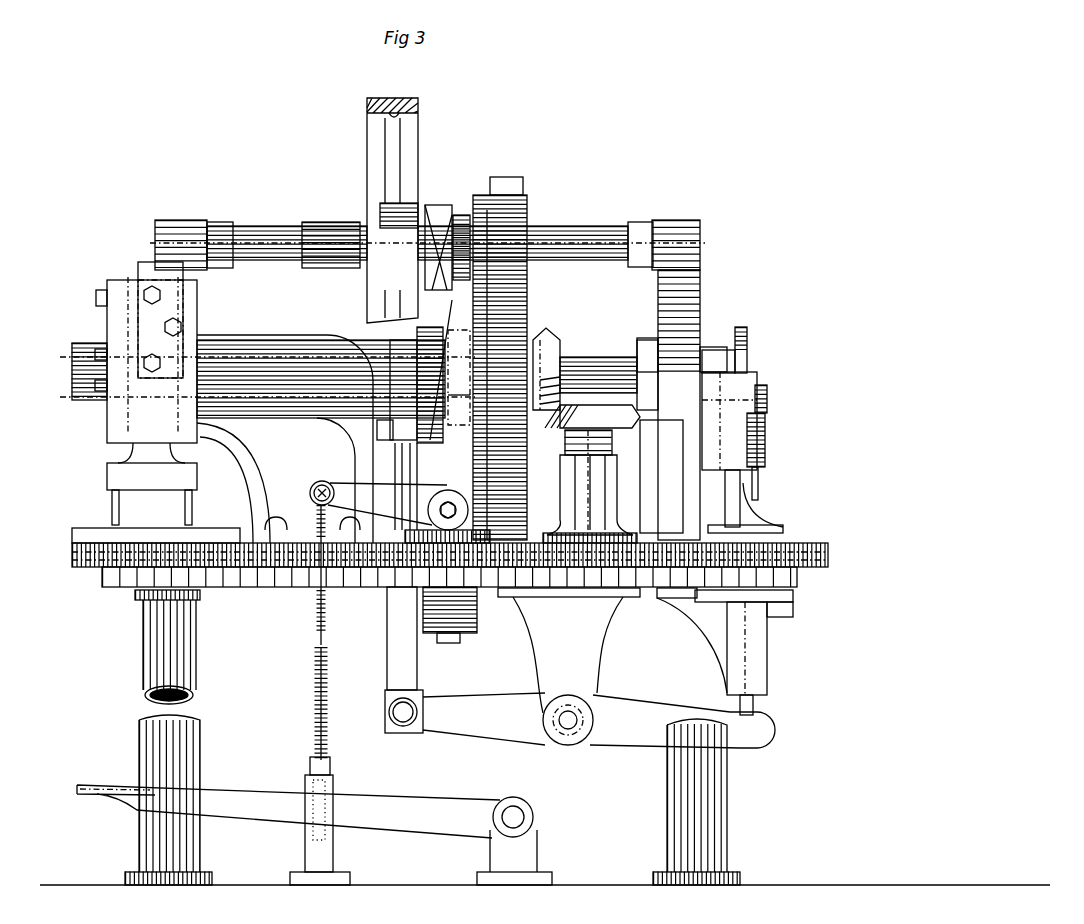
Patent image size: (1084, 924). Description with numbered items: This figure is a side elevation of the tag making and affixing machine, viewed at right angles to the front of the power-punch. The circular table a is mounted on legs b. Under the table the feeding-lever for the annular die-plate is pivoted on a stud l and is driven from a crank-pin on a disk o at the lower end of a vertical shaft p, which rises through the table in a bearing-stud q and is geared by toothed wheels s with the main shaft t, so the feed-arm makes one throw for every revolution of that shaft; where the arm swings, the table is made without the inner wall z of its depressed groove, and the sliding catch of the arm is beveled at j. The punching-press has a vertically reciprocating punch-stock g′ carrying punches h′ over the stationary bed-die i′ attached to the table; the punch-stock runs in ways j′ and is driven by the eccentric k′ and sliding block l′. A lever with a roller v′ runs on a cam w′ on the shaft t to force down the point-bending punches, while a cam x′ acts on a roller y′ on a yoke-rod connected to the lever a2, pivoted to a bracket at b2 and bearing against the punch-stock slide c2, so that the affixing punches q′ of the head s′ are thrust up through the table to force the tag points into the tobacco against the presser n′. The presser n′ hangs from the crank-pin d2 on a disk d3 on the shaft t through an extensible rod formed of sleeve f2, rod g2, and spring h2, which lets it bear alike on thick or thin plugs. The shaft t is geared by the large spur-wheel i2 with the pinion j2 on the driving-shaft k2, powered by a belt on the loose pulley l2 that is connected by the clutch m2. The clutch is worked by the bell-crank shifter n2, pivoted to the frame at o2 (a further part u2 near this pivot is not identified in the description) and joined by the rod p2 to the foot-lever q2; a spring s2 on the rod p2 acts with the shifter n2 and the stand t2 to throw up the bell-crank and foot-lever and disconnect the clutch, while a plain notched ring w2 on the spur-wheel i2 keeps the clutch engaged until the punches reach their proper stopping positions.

The loose pulley l2 is at (393, 196).
The clutch m2 is at (447, 235).
The pinion j2 is at (527, 184).
The driving-shaft k2 is at (427, 241).
The toothed wheels s is at (548, 441).
The main shaft t is at (72, 358).
The bevel of sliding catch j is at (122, 282).
The punch-stock g′ is at (154, 358).
The eccentric k′ is at (135, 343).
The sliding block l′ is at (145, 325).
The ways j′ is at (108, 466).
The punches h′ is at (163, 507).
The bed-die i′ is at (142, 538).
The inner wall z is at (397, 486).
The roller y′ is at (404, 443).
The bell-crank shifter n2 is at (385, 479).
The pivot pin u2 is at (470, 450).
The shifter pivot o2 is at (447, 507).
The cam x′ is at (416, 385).
The cam w′ is at (451, 330).
The ring w2 is at (470, 397).
The roller v′ is at (470, 377).
The spur-wheel i2 is at (559, 480).
The bearing-stud q is at (572, 490).
The vertical shaft p is at (600, 416).
The disk d3 is at (748, 340).
The crank-pin d2 is at (768, 400).
The sleeve f2 is at (766, 437).
The spring h2 is at (766, 455).
The rod g2 is at (759, 483).
The presser n′ is at (784, 530).
The circular table a is at (828, 555).
The affixing punches q′ is at (793, 596).
The head s′ is at (787, 617).
The disk o is at (630, 597).
The punch-stock slide c2 is at (752, 709).
The bracket pivot b2 is at (562, 745).
The lever a2 is at (562, 719).
The stud l is at (436, 638).
The foot-lever q2 is at (314, 835).
The legs b is at (438, 737).
The rod p2 is at (326, 648).
The spring s2 is at (330, 693).
The stand t2 is at (331, 768).